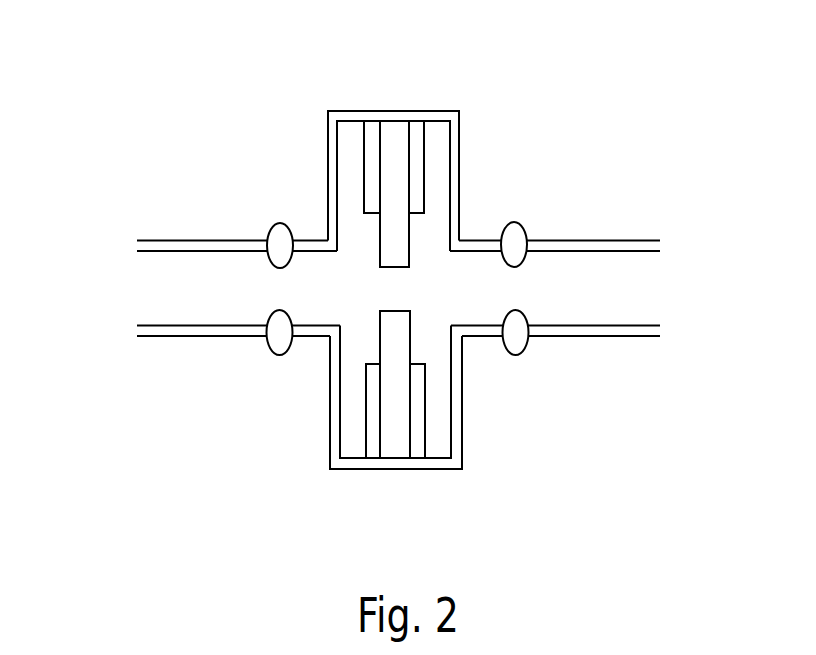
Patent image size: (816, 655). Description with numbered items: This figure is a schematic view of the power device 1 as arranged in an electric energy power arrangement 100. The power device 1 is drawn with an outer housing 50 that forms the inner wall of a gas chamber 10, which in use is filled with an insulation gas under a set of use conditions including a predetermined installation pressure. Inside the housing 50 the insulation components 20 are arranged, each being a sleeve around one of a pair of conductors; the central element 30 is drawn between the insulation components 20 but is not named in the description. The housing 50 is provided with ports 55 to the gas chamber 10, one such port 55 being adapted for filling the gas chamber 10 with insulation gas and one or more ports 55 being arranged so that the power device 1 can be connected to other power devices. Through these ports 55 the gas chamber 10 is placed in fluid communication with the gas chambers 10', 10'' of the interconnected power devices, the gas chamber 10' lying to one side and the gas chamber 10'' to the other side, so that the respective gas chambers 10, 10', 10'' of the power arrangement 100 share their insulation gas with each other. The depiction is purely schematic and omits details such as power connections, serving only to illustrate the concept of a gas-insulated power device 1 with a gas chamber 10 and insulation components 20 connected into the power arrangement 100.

The electric energy power arrangement 100 is at (173, 100).
The power device 1 is at (310, 98).
The outer housing 50 is at (460, 143).
The gas chamber 10 is at (442, 289).
The gas chamber 10' is at (238, 246).
The gas chamber 10'' is at (581, 256).
The central electrode 30 is at (397, 130).
The insulating component 20 is at (413, 130).
The port 55 is at (292, 298).